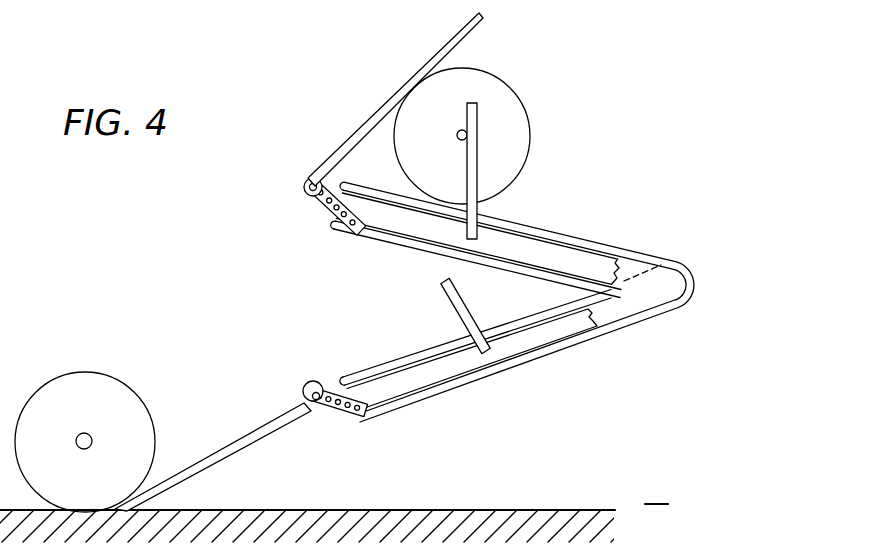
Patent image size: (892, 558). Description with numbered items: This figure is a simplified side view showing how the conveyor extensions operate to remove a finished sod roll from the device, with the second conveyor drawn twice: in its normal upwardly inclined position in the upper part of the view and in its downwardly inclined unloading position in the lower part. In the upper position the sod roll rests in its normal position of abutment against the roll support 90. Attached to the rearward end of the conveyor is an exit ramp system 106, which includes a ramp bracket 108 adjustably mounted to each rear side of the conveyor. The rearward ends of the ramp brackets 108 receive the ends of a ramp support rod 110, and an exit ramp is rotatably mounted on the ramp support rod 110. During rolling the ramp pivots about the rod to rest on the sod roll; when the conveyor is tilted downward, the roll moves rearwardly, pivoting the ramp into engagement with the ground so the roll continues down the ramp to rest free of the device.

The roll support 90 is at (477, 112).
The exit ramp system 106 is at (317, 171).
The ramp bracket 108 is at (322, 226).
The ramp support rod 110 is at (306, 193).